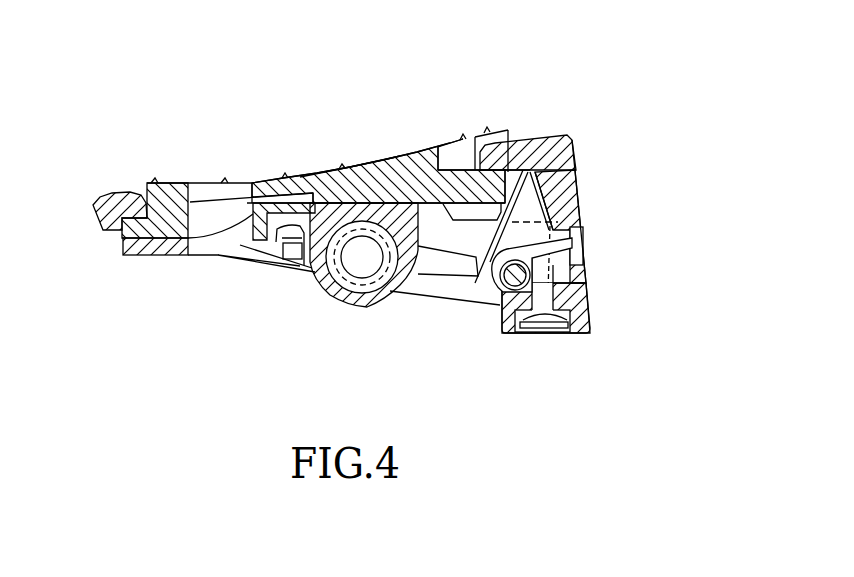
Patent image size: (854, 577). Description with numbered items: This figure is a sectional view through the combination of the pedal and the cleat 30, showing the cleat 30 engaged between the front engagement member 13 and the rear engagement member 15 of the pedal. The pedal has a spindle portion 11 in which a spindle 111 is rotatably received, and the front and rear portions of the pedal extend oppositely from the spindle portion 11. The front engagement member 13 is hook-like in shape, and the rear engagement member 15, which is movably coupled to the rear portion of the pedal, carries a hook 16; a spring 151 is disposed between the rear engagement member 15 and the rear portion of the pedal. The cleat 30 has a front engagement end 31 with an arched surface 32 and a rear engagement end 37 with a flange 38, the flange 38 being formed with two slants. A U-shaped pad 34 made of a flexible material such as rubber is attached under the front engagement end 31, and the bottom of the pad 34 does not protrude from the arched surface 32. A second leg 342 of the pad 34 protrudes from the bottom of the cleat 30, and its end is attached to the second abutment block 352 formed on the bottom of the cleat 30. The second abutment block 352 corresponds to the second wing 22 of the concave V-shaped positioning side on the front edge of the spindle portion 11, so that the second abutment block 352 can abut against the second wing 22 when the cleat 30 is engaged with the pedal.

The cleat 30 is at (397, 148).
The front engagement member 13 is at (143, 221).
The front engagement end 31 is at (177, 176).
The second abutment block 352 is at (306, 206).
The second wing 22 is at (328, 196).
The U-shaped pad 34 is at (143, 254).
The arched surface 32 is at (128, 232).
The second leg 342 is at (265, 240).
The spindle portion 11 is at (410, 248).
The spindle 111 is at (367, 278).
The hook 16 is at (516, 152).
The rear engagement end 37 is at (511, 198).
The flange 38 is at (512, 181).
The rear engagement member 15 is at (605, 312).
The spring 151 is at (573, 263).